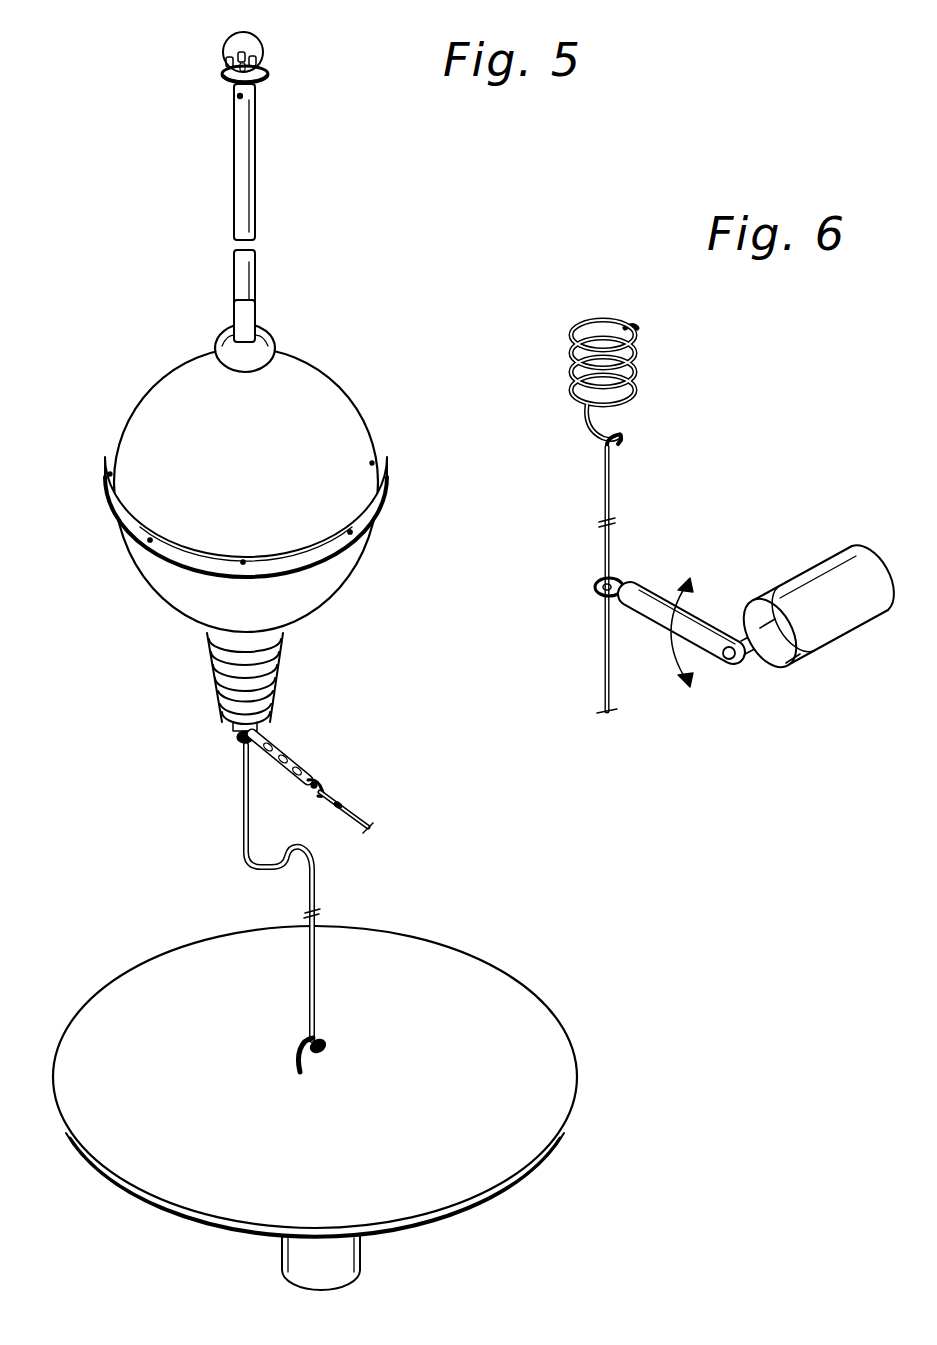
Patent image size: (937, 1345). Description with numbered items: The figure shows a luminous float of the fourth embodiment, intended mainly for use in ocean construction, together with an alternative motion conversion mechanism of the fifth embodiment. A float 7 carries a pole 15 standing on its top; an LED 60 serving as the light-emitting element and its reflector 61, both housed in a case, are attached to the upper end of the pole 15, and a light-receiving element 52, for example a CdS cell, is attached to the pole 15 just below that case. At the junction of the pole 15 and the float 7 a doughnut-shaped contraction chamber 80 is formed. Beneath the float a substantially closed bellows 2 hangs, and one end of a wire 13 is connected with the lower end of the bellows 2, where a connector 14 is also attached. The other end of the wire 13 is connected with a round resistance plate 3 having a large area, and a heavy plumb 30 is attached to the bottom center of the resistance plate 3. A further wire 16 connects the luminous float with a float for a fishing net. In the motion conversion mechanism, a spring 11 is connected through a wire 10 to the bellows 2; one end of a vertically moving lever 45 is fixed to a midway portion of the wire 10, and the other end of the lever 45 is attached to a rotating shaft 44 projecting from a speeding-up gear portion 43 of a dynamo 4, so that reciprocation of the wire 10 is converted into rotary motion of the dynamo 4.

In FIG. 5, the bellows 2 is at (283, 665).
In FIG. 5, the resistance plate 3 is at (450, 960).
In FIG. 6, the dynamo 4 is at (842, 566).
In FIG. 5, the float 7 is at (348, 410).
In FIG. 6, the wire 10 is at (613, 488).
In FIG. 6, the spring 11 is at (600, 318).
In FIG. 5, the wire 13 is at (243, 795).
In FIG. 5, the connector 14 is at (290, 756).
In FIG. 5, the pole 15 is at (254, 207).
In FIG. 5, the wire 16 is at (372, 822).
In FIG. 5, the plumb 30 is at (364, 1258).
In FIG. 6, the speeding-up gear portion 43 is at (797, 657).
In FIG. 6, the rotating shaft 44 is at (763, 660).
In FIG. 6, the vertically moving lever 45 is at (650, 620).
In FIG. 5, the light-receiving element 52 is at (245, 100).
In FIG. 5, the LED 60 is at (266, 66).
In FIG. 5, the reflector 61 is at (262, 42).
In FIG. 5, the contraction chamber 80 is at (272, 340).